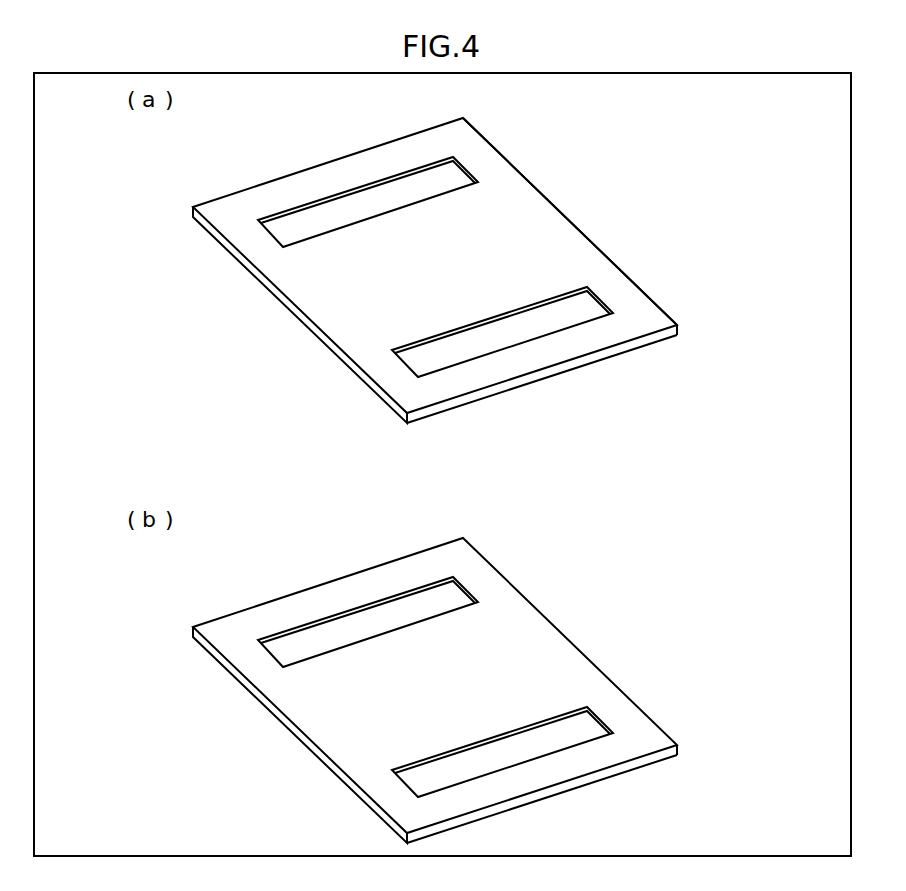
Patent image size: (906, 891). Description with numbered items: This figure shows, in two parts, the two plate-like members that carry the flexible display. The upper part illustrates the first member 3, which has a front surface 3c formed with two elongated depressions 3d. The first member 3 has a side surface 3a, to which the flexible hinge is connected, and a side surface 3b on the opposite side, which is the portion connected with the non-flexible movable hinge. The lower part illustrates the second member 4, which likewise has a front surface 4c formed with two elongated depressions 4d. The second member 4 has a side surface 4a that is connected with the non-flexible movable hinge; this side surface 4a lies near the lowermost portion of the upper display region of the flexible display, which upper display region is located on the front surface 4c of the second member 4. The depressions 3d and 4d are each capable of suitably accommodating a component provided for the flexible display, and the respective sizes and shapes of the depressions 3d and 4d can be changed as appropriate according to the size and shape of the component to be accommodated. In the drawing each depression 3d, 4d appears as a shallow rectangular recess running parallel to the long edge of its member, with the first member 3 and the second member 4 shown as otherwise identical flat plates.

The first member 3 is at (444, 269).
The side surface 3a is at (302, 318).
The side surface 3b is at (561, 211).
The front surface 3c is at (343, 177).
The depressions 3d is at (441, 180).
The second member 4 is at (444, 689).
The side surface 4a is at (435, 735).
The front surface 4c is at (435, 685).
The depressions 4d is at (476, 673).